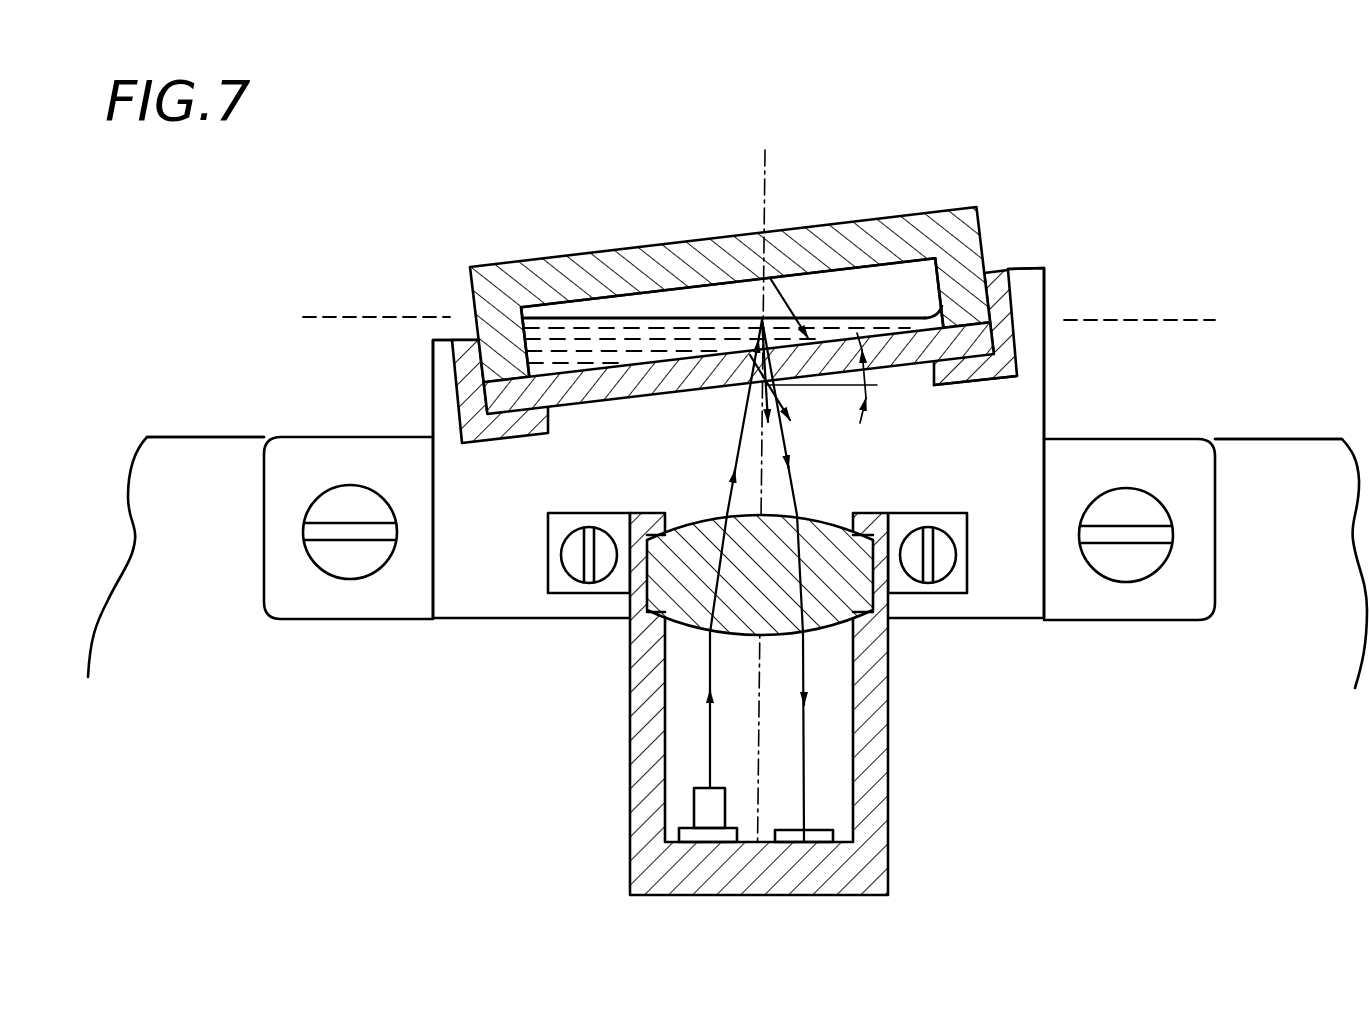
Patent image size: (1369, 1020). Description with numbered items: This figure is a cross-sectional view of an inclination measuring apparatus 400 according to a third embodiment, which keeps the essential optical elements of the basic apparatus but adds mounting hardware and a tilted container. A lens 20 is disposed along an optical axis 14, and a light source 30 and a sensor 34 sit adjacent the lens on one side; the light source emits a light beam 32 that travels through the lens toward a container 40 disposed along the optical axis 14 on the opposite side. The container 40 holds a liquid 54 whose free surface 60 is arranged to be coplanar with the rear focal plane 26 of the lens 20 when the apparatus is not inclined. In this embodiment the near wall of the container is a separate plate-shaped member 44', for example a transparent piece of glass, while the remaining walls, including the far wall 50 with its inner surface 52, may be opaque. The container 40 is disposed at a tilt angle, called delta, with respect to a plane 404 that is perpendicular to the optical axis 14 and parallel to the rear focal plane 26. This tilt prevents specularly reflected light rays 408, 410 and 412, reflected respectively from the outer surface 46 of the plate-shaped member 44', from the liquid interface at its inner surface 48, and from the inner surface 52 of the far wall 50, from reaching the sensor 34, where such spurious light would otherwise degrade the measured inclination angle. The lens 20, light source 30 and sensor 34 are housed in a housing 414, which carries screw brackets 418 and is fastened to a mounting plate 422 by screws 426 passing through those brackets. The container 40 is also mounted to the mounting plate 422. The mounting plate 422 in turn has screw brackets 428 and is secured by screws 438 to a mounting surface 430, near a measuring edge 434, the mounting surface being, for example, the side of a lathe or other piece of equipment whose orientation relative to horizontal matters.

The optical axis 14 is at (767, 155).
The lens 20 is at (830, 598).
The rear focal plane 26 is at (1168, 320).
The light source 30 is at (693, 803).
The light beam 32 is at (710, 735).
The sensor 34 is at (833, 833).
The container 40 is at (458, 257).
The plate-shaped member 44' is at (739, 400).
The outer surface 46 is at (915, 392).
The inner surface 48 is at (955, 312).
The far wall 50 is at (850, 243).
The inner surface 52 is at (918, 262).
The liquid 54 is at (563, 342).
The free surface 60 is at (928, 312).
The inclination measuring apparatus 400 is at (500, 142).
The plane 404 is at (855, 386).
The light ray 408 is at (753, 395).
The light ray 410 is at (790, 398).
The light ray 412 is at (790, 302).
The housing 414 is at (948, 718).
The screw brackets 418 is at (548, 580).
The mounting plate 422 is at (420, 400).
The screws 426 is at (548, 530).
The screw brackets 428 is at (258, 610).
The mounting surface 430 is at (155, 428).
The measuring edge 434 is at (247, 433).
The screws 438 is at (318, 500).